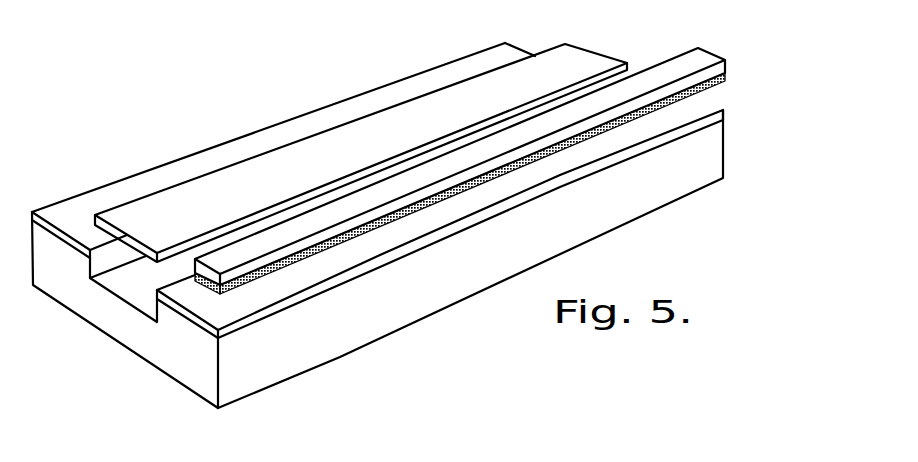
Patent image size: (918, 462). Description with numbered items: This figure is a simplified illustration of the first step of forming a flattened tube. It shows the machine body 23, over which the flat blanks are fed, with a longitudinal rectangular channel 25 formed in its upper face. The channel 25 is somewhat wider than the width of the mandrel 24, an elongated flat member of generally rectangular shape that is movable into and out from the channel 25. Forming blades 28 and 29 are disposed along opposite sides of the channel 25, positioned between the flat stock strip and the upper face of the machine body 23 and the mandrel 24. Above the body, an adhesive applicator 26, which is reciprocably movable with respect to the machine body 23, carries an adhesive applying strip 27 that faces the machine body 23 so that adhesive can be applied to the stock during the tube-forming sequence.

The machine body 23 is at (350, 335).
The mandrel 24 is at (597, 60).
The channel 25 is at (130, 297).
The adhesive applicator 26 is at (700, 53).
The adhesive applying strip 27 is at (726, 76).
The forming blade 28 is at (120, 187).
The forming blade 29 is at (724, 108).